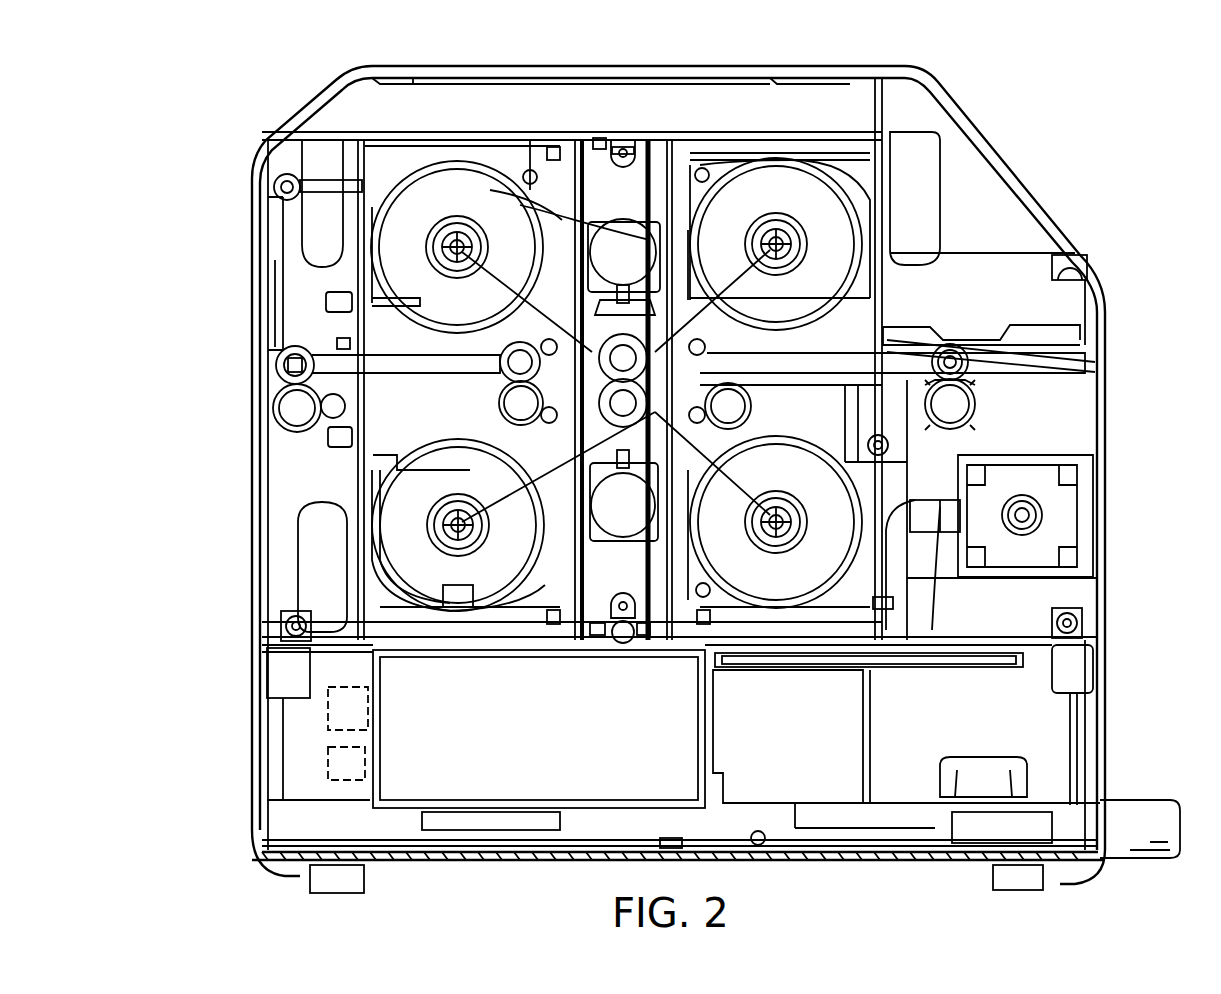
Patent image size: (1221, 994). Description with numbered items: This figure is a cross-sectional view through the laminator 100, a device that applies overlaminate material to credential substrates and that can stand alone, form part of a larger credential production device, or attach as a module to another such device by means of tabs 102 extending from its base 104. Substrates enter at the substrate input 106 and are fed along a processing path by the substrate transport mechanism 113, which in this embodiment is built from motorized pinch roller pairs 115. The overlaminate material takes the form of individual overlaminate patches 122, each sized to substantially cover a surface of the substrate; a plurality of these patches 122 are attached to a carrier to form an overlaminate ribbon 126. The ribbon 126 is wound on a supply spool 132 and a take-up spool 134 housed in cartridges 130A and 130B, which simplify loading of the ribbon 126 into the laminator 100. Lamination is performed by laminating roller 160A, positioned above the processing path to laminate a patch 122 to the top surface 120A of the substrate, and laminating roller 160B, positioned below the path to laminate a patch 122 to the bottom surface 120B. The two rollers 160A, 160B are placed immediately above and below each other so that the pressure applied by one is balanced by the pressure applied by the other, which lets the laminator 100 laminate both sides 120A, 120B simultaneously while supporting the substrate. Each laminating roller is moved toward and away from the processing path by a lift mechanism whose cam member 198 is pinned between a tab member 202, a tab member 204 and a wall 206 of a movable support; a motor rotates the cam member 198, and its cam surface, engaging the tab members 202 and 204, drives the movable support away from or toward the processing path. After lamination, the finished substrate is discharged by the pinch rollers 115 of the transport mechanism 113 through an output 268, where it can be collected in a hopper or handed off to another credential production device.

The laminator 100 is at (1128, 150).
The tabs 102 is at (1145, 812).
The base 104 is at (435, 850).
The substrate input 106 is at (1122, 348).
The substrate transport mechanism 113 is at (975, 332).
The pinch roller pairs 115 is at (270, 402).
The top surface 120A is at (597, 205).
The bottom surface 120B is at (645, 560).
The overlaminate patches 122 is at (890, 418).
The overlaminate ribbon 126 is at (690, 300).
The cartridge 130A is at (862, 180).
The cartridge 130B is at (375, 588).
The supply spool 132 is at (835, 255).
The take-up spool 134 is at (397, 240).
The laminating roller 160A is at (560, 328).
The laminating roller 160B is at (535, 500).
The cam member 198 is at (612, 242).
The tab member 202 is at (528, 208).
The tab member 204 is at (580, 282).
The wall 206 is at (668, 242).
The output 268 is at (276, 376).